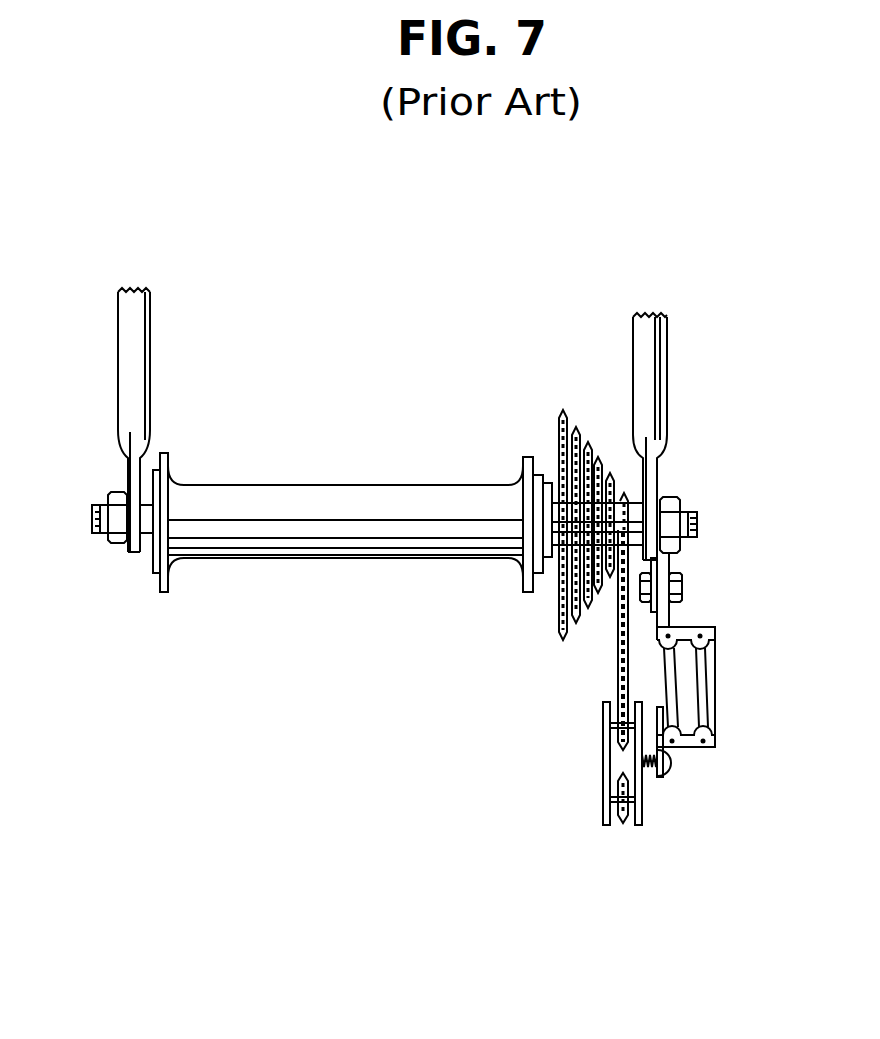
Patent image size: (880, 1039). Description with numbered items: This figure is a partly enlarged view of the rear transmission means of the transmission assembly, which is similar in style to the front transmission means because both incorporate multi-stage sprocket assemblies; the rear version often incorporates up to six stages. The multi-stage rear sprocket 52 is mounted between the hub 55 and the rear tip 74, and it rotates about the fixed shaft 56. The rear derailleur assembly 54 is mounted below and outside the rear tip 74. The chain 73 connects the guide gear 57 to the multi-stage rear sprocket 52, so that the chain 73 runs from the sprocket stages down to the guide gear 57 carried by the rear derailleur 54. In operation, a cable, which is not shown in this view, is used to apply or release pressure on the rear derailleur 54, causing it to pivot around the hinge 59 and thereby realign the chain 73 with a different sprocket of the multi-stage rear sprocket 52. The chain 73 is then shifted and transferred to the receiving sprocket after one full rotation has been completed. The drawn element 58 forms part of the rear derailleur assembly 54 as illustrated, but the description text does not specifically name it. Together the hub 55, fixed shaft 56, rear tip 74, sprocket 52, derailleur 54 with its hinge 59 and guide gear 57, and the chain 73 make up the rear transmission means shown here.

The multi-stage rear sprocket 52 is at (597, 420).
The rear derailleur assembly 54 is at (705, 735).
The hub 55 is at (348, 497).
The fixed shaft 56 is at (92, 518).
The guide gear 57 is at (622, 828).
The derailleur body (parallelogram linkage) 58 is at (695, 705).
The hinge 59 is at (672, 633).
The chain 73 is at (617, 660).
The rear tip 74 is at (130, 477).